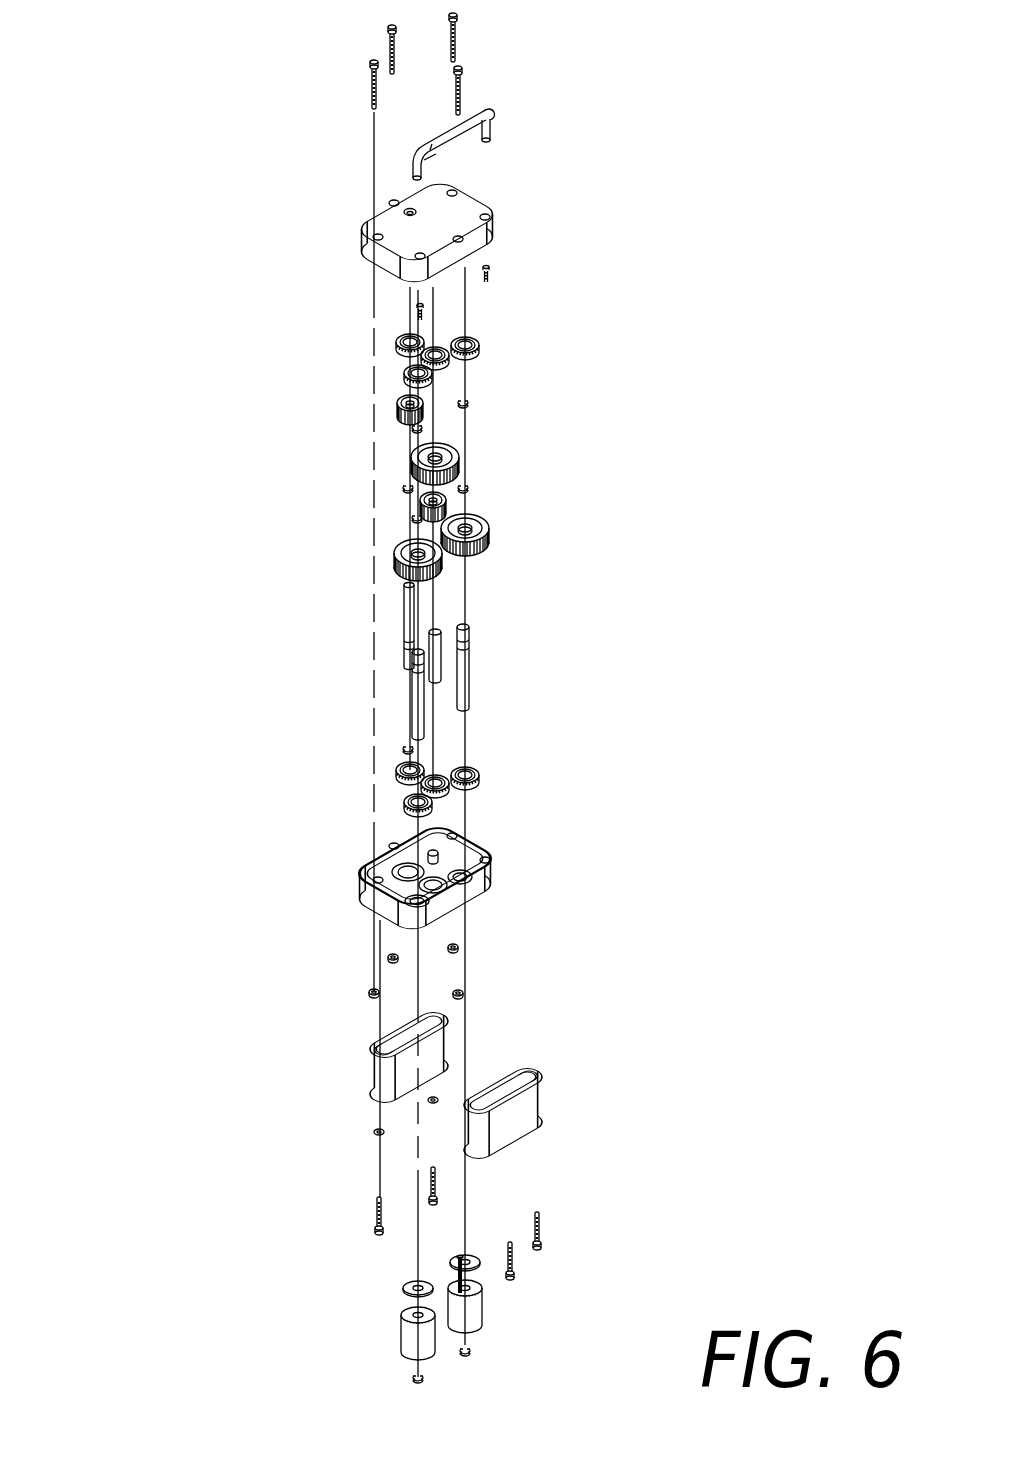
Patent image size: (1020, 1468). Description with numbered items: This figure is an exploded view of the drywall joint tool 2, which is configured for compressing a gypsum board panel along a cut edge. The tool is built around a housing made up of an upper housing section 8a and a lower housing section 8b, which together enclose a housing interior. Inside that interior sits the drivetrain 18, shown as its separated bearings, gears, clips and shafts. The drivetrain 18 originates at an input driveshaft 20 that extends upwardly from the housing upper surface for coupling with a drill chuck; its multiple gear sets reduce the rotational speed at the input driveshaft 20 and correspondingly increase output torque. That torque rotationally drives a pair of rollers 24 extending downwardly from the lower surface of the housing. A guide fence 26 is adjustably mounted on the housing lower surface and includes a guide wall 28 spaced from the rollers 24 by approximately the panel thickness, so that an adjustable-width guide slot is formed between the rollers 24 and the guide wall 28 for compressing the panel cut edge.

The drywall joint tool 2 is at (140, 210).
The upper housing section 8a is at (366, 214).
The lower housing section 8b is at (362, 893).
The drivetrain 18 is at (575, 513).
The input driveshaft 20 is at (435, 630).
The rollers 24 is at (480, 1323).
The guide fence 26 is at (365, 1053).
The guide wall 28 is at (437, 1047).